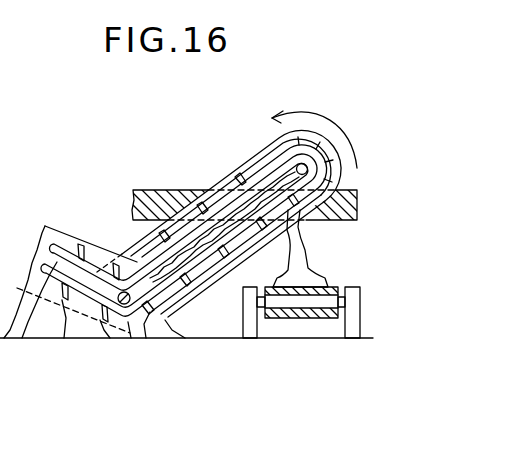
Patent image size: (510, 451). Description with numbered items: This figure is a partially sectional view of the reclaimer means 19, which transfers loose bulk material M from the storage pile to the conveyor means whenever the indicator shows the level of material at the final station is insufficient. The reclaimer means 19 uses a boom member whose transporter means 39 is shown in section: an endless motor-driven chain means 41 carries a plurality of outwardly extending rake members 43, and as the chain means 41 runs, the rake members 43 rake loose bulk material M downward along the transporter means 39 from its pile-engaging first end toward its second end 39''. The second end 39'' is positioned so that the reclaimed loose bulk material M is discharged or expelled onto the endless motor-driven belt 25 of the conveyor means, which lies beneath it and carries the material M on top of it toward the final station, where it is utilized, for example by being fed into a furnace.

The reclaimer means 19 is at (107, 204).
The transporter means 39 is at (184, 206).
The second end of transporter means 39'' is at (238, 293).
The endless motor-driven chain means 41 is at (238, 176).
The rake members 43 is at (200, 200).
The endless motor-driven belt 25 is at (318, 315).
The loose bulk material M is at (312, 262).